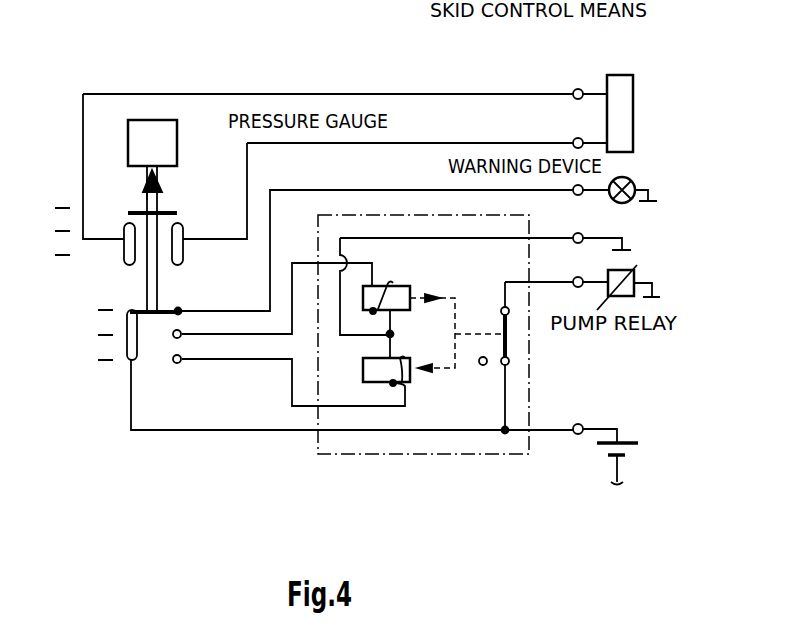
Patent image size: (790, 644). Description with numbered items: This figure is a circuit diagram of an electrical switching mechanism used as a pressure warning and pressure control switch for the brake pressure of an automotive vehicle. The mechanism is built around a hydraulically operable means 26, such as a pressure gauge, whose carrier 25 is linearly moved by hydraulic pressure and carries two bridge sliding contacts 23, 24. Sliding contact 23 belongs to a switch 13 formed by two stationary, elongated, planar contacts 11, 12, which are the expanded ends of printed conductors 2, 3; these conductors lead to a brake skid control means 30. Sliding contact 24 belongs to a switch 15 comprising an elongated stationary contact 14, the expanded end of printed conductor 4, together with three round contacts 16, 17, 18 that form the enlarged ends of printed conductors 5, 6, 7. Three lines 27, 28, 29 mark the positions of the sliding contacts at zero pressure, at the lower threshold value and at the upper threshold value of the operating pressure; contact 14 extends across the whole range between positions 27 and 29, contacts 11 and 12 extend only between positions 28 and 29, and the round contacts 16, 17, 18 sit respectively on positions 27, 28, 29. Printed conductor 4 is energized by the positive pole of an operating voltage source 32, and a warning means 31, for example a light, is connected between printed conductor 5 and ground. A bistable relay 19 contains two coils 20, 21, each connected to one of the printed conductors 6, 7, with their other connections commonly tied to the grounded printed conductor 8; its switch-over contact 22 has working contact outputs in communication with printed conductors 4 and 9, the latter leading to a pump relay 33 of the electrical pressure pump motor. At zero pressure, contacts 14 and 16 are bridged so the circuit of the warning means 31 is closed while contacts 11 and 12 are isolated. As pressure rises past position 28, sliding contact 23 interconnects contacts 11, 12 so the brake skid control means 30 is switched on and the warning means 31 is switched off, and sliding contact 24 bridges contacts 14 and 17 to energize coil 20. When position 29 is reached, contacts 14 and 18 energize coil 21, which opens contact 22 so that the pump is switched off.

The printed conductor 2 is at (432, 93).
The printed conductor 3 is at (432, 143).
The printed conductor 4 is at (152, 432).
The printed conductor 5 is at (227, 308).
The printed conductor 6 is at (241, 334).
The printed conductor 7 is at (231, 362).
The printed conductor 8 is at (464, 240).
The printed conductor 9 is at (520, 282).
The stationary contact 11 is at (124, 230).
The stationary contact 12 is at (182, 232).
The switch 13 is at (191, 206).
The stationary contact 14 is at (135, 358).
The switch 15 is at (181, 299).
The circular contact 16 is at (176, 314).
The circular contact 17 is at (181, 337).
The circular contact 18 is at (179, 364).
The bistable relay 19 is at (455, 438).
The coil 20 is at (401, 312).
The coil 21 is at (411, 385).
The switch-over contact 22 is at (503, 328).
The sliding contact 23 is at (167, 212).
The sliding contact 24 is at (139, 308).
The carrier 25 is at (147, 198).
The hydraulically operable means 26 is at (168, 128).
The zero pressure position 27 is at (57, 207).
The lower threshold position 28 is at (55, 229).
The upper threshold position 29 is at (55, 256).
The brake skid control means 30 is at (620, 83).
The warning means 31 is at (628, 180).
The operating voltage source 32 is at (627, 440).
The pump relay 33 is at (637, 278).